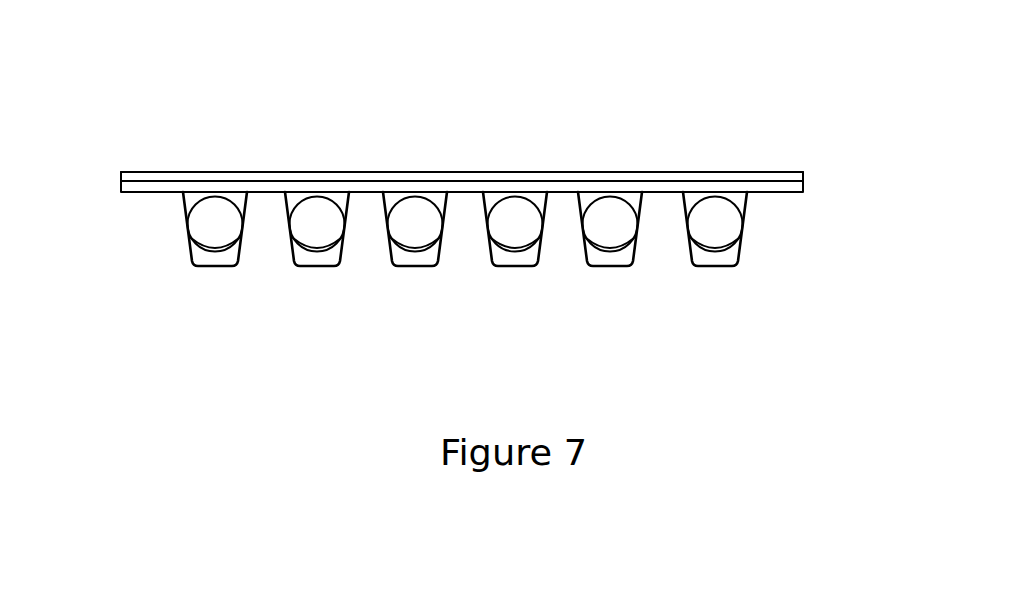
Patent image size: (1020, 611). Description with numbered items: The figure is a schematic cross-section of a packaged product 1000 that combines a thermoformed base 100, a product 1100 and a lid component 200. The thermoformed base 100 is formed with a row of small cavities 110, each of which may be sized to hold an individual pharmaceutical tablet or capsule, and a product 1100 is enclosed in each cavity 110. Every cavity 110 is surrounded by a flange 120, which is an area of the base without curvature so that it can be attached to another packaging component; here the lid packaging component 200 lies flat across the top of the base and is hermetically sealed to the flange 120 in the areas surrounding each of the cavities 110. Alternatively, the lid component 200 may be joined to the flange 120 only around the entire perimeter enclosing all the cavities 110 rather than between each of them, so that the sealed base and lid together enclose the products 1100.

The light emitting assembly 1000 is at (663, 73).
The lid packaging component 200 is at (116, 173).
The flange 120 is at (772, 172).
The thermoformed base 100 is at (116, 192).
The cavity 110 is at (337, 263).
The product 1100 is at (720, 230).